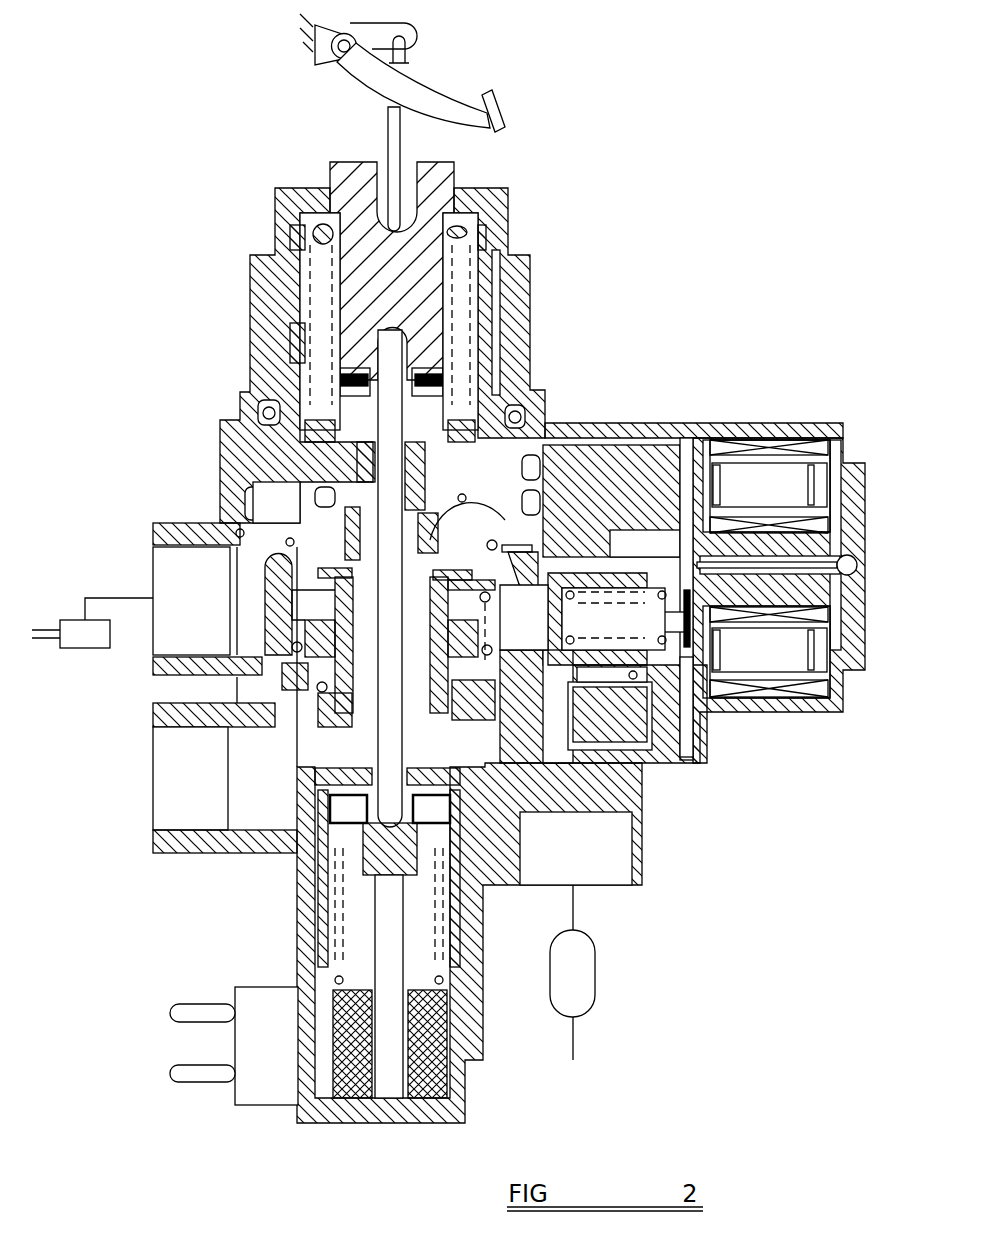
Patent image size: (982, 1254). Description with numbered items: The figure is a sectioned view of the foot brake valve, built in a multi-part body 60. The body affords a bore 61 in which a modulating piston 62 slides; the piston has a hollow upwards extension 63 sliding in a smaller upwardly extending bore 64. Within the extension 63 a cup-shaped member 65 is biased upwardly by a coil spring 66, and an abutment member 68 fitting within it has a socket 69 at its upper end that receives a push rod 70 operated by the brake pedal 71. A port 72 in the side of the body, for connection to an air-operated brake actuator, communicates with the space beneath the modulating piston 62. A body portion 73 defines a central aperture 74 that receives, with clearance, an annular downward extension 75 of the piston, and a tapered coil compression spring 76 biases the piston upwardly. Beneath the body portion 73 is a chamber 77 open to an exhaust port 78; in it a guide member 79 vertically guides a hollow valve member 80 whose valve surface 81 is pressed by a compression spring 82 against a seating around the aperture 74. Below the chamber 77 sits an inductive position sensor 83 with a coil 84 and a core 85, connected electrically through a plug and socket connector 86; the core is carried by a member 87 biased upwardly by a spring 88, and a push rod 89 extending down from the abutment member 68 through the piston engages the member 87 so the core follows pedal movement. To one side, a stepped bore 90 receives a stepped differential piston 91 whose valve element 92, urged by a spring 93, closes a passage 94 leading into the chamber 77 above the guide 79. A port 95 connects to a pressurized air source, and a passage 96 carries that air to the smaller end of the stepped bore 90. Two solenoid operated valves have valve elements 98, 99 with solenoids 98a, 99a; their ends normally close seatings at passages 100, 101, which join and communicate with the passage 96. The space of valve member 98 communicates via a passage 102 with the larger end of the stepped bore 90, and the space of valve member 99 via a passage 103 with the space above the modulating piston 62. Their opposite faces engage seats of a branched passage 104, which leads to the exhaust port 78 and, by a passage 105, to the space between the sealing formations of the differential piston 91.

The body 60 is at (545, 420).
The bore 61 is at (235, 532).
The modulating piston 62 is at (240, 478).
The hollow upwards extension 63 is at (280, 323).
The upwardly extending bore 64 is at (500, 260).
The cup-shaped member 65 is at (314, 226).
The coil spring 66 is at (300, 233).
The abutment member 68 is at (500, 340).
The socket 69 is at (372, 170).
The push rod 70 is at (398, 143).
The brake pedal 71 is at (413, 93).
The port 72 is at (196, 589).
The body portion 73 is at (275, 610).
The central aperture 74 is at (260, 687).
The annular downward extension 75 is at (590, 432).
The tapered coil compression spring 76 is at (297, 527).
The chamber 77 is at (385, 762).
The exhaust port 78 is at (165, 778).
The guide member 79 is at (567, 872).
The hollow valve member 80 is at (415, 712).
The valve surface 81 is at (540, 537).
The compression spring 82 is at (407, 637).
The position sensor 83 is at (453, 1015).
The coil 84 is at (437, 1083).
The core 85 is at (387, 957).
The electrical plug and socket connector 86 is at (208, 1086).
The member 87 is at (340, 900).
The spring 88 is at (345, 920).
The push rod 89 is at (327, 878).
The stepped bore 90 is at (705, 700).
The stepped differential piston 91 is at (647, 700).
The valve element 92 is at (588, 810).
The spring 93 is at (640, 647).
The passage 94 is at (510, 660).
The port 95 is at (573, 873).
The passage 96 is at (555, 800).
The valve element 98 is at (766, 652).
The solenoid 98a is at (815, 712).
The valve element 99 is at (766, 486).
The solenoid 99a is at (813, 430).
The passage 100 is at (710, 708).
The passage 101 is at (752, 437).
The passage 102 is at (690, 610).
The passage 103 is at (693, 437).
The branched passage 104 is at (850, 548).
The passage 105 is at (773, 570).